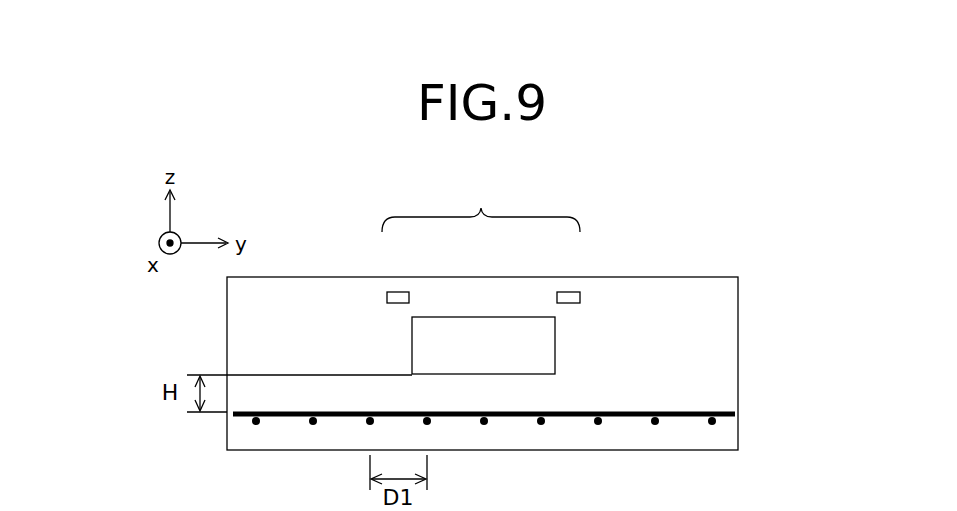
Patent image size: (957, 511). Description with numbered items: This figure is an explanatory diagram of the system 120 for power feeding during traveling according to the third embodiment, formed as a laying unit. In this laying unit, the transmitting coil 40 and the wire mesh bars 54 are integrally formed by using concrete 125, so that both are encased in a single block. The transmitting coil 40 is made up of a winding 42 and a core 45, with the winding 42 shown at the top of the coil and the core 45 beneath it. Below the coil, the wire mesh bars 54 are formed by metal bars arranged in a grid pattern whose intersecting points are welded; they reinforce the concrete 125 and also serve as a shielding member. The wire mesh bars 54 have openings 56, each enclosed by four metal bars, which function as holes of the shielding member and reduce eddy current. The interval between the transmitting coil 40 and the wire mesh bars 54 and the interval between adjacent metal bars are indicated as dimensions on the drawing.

The system for power feeding during traveling 120 is at (687, 228).
The concrete 125 is at (652, 288).
The transmitting coil 40 is at (481, 208).
The winding 42 is at (397, 292).
The core 45 is at (489, 317).
The wire mesh bars 54 is at (723, 412).
The openings 56 is at (688, 427).